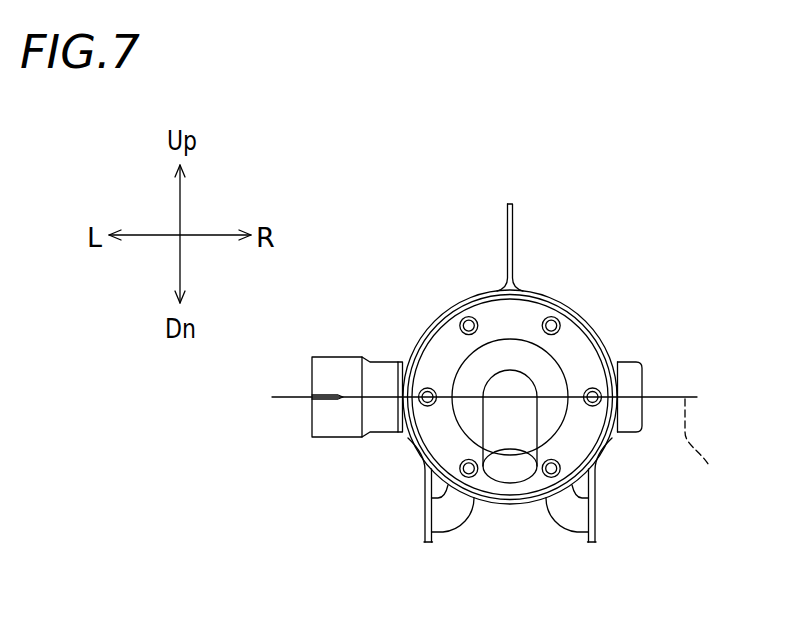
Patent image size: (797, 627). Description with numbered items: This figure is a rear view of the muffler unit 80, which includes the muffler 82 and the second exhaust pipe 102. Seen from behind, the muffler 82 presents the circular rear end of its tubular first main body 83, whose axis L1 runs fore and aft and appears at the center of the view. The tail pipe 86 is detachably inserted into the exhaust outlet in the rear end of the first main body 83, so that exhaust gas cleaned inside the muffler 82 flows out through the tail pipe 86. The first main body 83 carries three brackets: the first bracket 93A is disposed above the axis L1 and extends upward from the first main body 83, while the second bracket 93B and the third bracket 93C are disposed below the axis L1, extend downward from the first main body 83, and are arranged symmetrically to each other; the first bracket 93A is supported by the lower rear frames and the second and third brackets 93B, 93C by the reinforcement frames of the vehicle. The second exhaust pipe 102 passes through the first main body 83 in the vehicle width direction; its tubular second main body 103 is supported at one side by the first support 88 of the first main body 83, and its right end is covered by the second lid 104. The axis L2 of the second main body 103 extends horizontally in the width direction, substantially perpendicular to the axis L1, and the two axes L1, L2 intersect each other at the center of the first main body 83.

The muffler unit 80 is at (519, 374).
The muffler 82 is at (589, 309).
The first main body 83 is at (442, 312).
The tail pipe 86 is at (512, 425).
The first support 88 is at (403, 437).
The first bracket 93A is at (513, 222).
The second bracket 93B is at (425, 512).
The third bracket 93C is at (595, 512).
The second exhaust pipe 102 is at (323, 440).
The second main body 103 is at (380, 372).
The second lid 104 is at (641, 382).
The axis of the first main body L1 is at (513, 397).
The axis of the second main body L2 is at (711, 453).